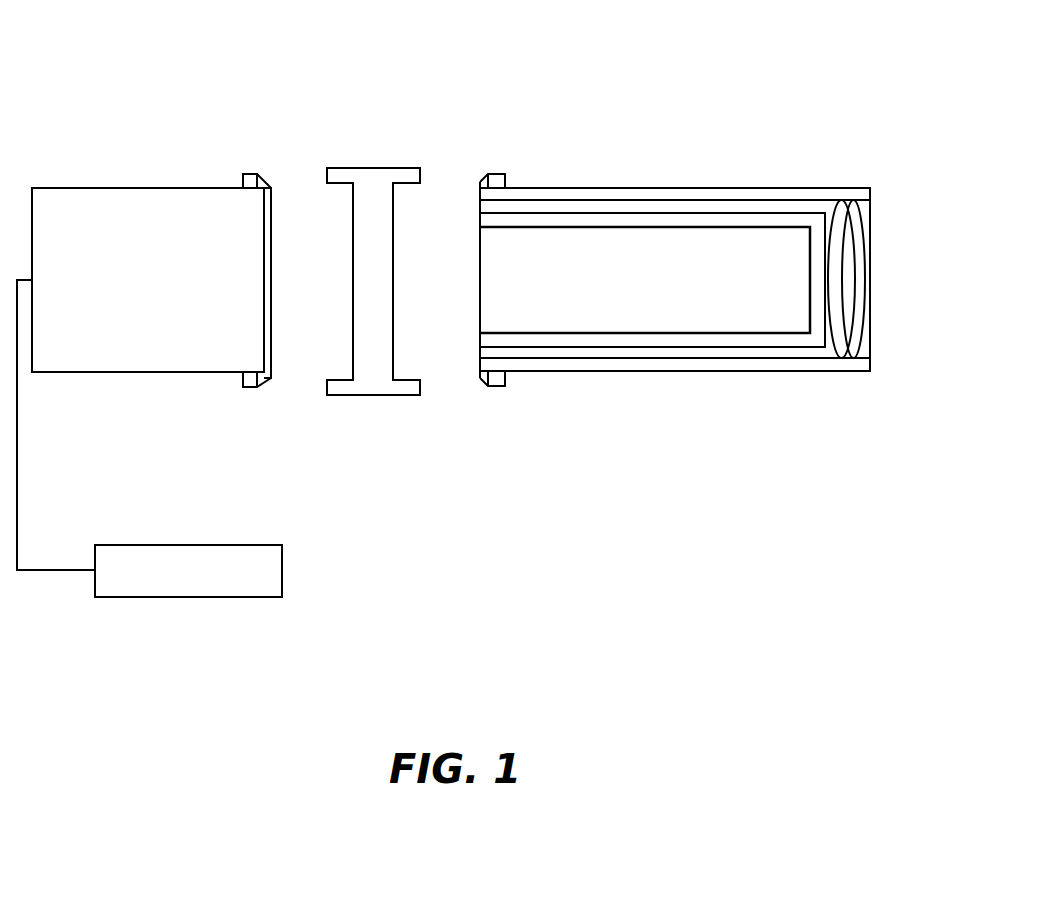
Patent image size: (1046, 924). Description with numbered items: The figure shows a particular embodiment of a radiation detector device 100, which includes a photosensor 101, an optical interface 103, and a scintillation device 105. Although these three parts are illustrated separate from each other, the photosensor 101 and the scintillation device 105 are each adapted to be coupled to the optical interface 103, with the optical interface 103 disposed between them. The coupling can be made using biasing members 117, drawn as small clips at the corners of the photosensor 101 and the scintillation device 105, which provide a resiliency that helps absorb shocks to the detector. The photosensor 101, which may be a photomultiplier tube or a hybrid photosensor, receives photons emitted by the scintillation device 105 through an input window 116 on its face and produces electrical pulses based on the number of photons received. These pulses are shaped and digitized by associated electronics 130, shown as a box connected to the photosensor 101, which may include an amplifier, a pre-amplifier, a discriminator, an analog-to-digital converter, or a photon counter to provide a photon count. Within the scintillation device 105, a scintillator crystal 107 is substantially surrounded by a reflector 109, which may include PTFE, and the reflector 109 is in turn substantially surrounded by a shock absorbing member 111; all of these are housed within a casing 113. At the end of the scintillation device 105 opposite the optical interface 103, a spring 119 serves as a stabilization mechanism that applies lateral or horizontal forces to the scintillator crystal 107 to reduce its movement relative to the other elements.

The radiation detector device 100 is at (125, 97).
The photosensor 101 is at (148, 280).
The optical interface 103 is at (380, 395).
The scintillation device 105 is at (710, 387).
The scintillator crystal 107 is at (652, 286).
The reflector 109 is at (723, 220).
The shock absorbing member 111 is at (643, 208).
The casing 113 is at (580, 186).
The input window 116 is at (272, 317).
The biasing members 117 is at (245, 171).
The spring 119 is at (852, 212).
The electronics 130 is at (188, 543).